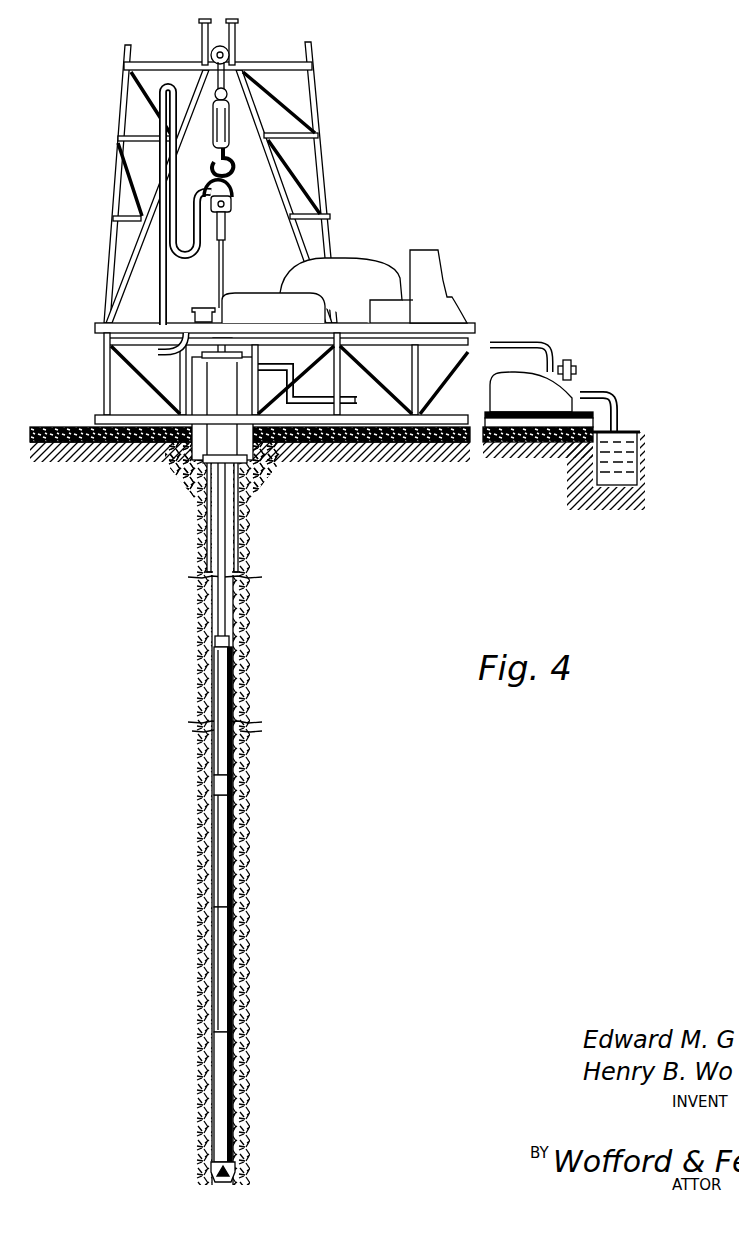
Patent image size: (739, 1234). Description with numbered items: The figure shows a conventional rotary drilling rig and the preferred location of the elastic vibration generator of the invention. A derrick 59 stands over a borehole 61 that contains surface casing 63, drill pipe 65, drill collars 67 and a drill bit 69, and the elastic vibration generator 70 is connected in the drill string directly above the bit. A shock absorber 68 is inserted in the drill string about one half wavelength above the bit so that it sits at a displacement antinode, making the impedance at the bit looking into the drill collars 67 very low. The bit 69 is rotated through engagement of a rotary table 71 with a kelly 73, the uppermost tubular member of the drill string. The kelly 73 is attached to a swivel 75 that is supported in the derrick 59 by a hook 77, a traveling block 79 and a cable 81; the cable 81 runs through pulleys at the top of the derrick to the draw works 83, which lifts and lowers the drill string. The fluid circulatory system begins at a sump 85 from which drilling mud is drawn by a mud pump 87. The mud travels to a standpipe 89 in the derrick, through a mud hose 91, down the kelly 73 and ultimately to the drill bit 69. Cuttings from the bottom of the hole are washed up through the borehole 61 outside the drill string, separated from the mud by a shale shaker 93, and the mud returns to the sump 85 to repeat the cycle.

The derrick 59 is at (308, 54).
The borehole 61 is at (212, 602).
The surface casing 63 is at (239, 547).
The drill pipe 65 is at (224, 596).
The drill collars 67 is at (224, 687).
The shock absorber 68 is at (224, 785).
The drill bit 69 is at (243, 1177).
The elastic vibration generator 70 is at (224, 1063).
The rotary table 71 is at (212, 306).
The kelly 73 is at (224, 272).
The swivel 75 is at (231, 203).
The hook 77 is at (236, 153).
The traveling block 79 is at (232, 52).
The cable 81 is at (236, 30).
The draw works 83 is at (360, 262).
The sump 85 is at (630, 473).
The mud pump 87 is at (587, 388).
The standpipe 89 is at (170, 74).
The mud hose 91 is at (186, 260).
The shale shaker 93 is at (296, 405).